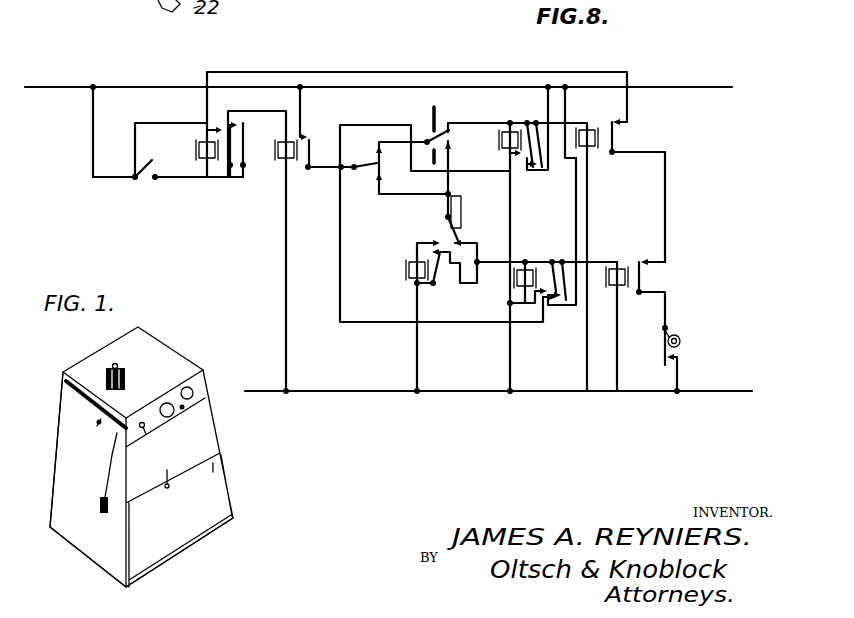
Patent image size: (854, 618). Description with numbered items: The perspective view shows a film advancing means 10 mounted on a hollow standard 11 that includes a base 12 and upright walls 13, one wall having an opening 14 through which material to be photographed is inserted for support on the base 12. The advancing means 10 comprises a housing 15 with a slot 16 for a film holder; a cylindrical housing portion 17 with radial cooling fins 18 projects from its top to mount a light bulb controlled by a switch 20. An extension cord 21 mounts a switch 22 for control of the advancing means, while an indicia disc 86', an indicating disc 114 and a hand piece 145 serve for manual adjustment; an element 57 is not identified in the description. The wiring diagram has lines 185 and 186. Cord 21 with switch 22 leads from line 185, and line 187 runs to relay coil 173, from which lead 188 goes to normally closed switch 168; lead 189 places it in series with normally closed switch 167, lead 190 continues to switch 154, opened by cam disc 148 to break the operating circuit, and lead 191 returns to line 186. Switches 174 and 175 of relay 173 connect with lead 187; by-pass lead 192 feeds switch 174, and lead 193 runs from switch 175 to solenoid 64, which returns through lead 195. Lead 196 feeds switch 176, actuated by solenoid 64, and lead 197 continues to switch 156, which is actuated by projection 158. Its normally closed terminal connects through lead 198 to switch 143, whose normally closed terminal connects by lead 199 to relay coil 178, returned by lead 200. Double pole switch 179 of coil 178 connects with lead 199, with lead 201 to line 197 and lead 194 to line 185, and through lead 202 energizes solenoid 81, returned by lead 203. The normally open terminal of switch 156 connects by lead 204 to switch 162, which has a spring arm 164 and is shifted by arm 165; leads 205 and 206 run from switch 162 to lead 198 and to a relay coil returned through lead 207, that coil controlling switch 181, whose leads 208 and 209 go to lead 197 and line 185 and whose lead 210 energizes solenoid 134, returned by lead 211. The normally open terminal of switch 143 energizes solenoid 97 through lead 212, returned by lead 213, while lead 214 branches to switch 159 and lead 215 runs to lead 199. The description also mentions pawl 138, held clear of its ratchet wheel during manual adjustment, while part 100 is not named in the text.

In FIG. 1, the film advancing means 10 is at (177, 352).
In FIG. 1, the hollow standard 11 is at (52, 456).
In FIG. 1, the base 12 is at (207, 524).
In FIG. 1, the upright walls 13 is at (84, 539).
In FIG. 1, the opening 14 is at (157, 471).
In FIG. 1, the housing 15 is at (103, 352).
In FIG. 1, the slot 16 is at (68, 389).
In FIG. 1, the cylindrical housing portion 17 is at (118, 365).
In FIG. 1, the radial cooling fins 18 is at (126, 379).
In FIG. 1, the switch 20 is at (98, 427).
In FIG. 8, the extension cord 21 is at (92, 144).
In FIG. 1, the extension cord 21 is at (109, 477).
In FIG. 8, the switch 22 is at (146, 179).
In FIG. 1, the switch 22 is at (99, 505).
In FIG. 1, the button 57 is at (153, 440).
In FIG. 1, the indicia disc 86' is at (211, 382).
In FIG. 1, the indicating disc 114 is at (170, 417).
In FIG. 1, the hand piece 145 is at (185, 408).
In FIG. 8, the line 185 is at (60, 87).
In FIG. 8, the line 186 is at (380, 393).
In FIG. 8, the line 187 is at (186, 179).
In FIG. 8, the lead 188 is at (247, 72).
In FIG. 8, the lead 189 is at (667, 193).
In FIG. 8, the lead 190 is at (668, 310).
In FIG. 8, the lead 191 is at (679, 376).
In FIG. 8, the by-pass lead 192 is at (165, 122).
In FIG. 8, the lead 193 is at (232, 111).
In FIG. 8, the lead 194 is at (576, 191).
In FIG. 8, the lead 195 is at (284, 238).
In FIG. 8, the lead 196 is at (302, 100).
In FIG. 8, the lead 197 is at (330, 170).
In FIG. 8, the lead 198 is at (446, 208).
In FIG. 8, the lead 199 is at (497, 261).
In FIG. 8, the lead 200 is at (521, 325).
In FIG. 8, the lead 201 is at (442, 323).
In FIG. 8, the lead 202 is at (598, 260).
In FIG. 8, the lead 203 is at (662, 329).
In FIG. 8, the lead 204 is at (425, 146).
In FIG. 8, the lead 205 is at (450, 185).
In FIG. 8, the lead 206 is at (496, 121).
In FIG. 8, the lead 207 is at (511, 215).
In FIG. 8, the lead 208 is at (370, 124).
In FIG. 8, the lead 209 is at (548, 85).
In FIG. 8, the lead 210 is at (568, 90).
In FIG. 8, the lead 211 is at (588, 193).
In FIG. 8, the lead 212 is at (415, 245).
In FIG. 8, the lead 213 is at (416, 349).
In FIG. 8, the lead 214 is at (425, 286).
In FIG. 8, the lead 215 is at (479, 286).
In FIG. 8, the relay coil 173 is at (196, 150).
In FIG. 8, the switch 174 is at (236, 180).
In FIG. 8, the switch 175 is at (245, 147).
In FIG. 8, the switch 176 is at (311, 142).
In FIG. 8, the solenoid 64 is at (284, 163).
In FIG. 8, the switch 156 is at (362, 154).
In FIG. 8, the projection 158 is at (378, 186).
In FIG. 8, the spring arm 164 is at (432, 120).
In FIG. 8, the elongated arm 165 is at (418, 146).
In FIG. 8, the switch 162 is at (498, 140).
In FIG. 8, the contact 100 is at (497, 162).
In FIG. 8, the double pole, single throw switch 181 is at (527, 121).
In FIG. 8, the solenoid 134 is at (590, 128).
In FIG. 8, the switch 168 is at (622, 134).
In FIG. 8, the switch 167 is at (660, 271).
In FIG. 8, the cam disc 148 is at (681, 341).
In FIG. 8, the switch 154 is at (668, 357).
In FIG. 8, the pawl 138 is at (462, 203).
In FIG. 8, the switch 143 is at (460, 236).
In FIG. 8, the switch 159 is at (440, 278).
In FIG. 8, the solenoid 97 is at (406, 271).
In FIG. 8, the relay coil 178 is at (526, 266).
In FIG. 8, the double pole, single throw switch 179 is at (555, 258).
In FIG. 8, the solenoid 81 is at (622, 267).